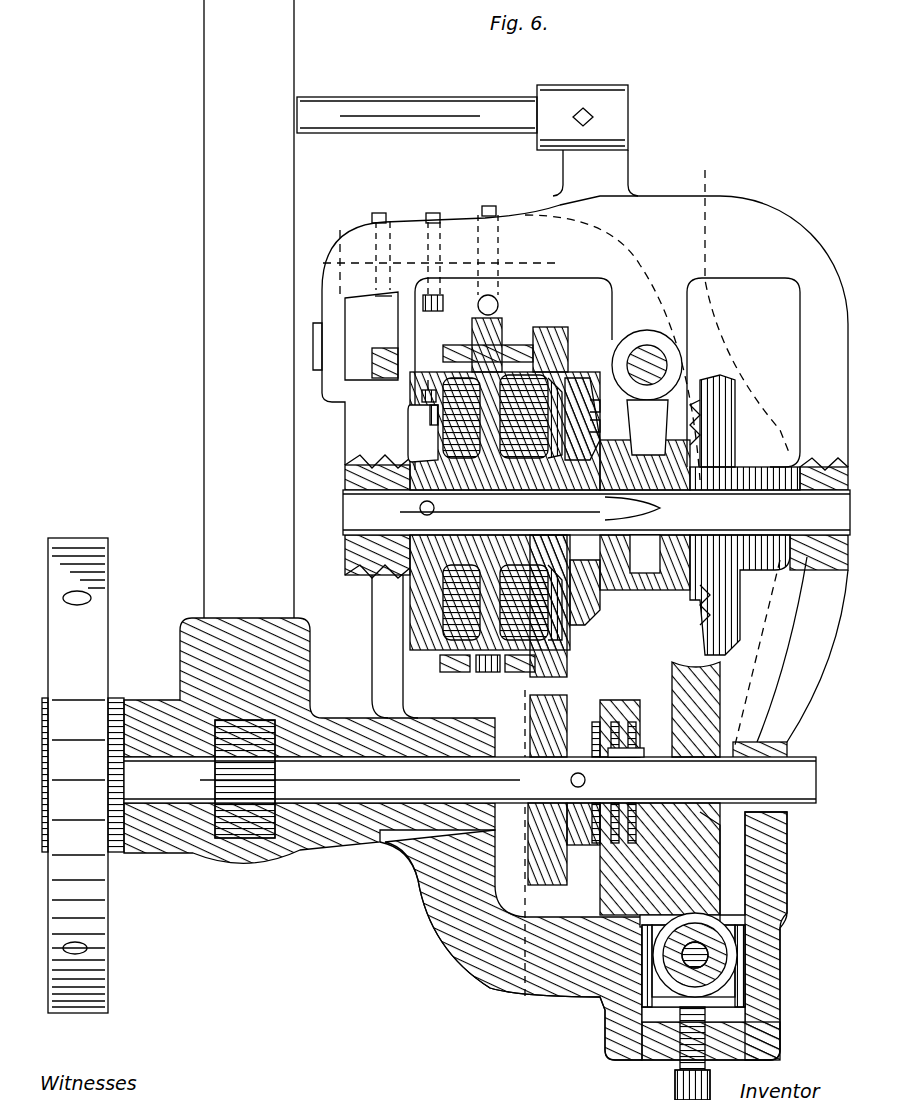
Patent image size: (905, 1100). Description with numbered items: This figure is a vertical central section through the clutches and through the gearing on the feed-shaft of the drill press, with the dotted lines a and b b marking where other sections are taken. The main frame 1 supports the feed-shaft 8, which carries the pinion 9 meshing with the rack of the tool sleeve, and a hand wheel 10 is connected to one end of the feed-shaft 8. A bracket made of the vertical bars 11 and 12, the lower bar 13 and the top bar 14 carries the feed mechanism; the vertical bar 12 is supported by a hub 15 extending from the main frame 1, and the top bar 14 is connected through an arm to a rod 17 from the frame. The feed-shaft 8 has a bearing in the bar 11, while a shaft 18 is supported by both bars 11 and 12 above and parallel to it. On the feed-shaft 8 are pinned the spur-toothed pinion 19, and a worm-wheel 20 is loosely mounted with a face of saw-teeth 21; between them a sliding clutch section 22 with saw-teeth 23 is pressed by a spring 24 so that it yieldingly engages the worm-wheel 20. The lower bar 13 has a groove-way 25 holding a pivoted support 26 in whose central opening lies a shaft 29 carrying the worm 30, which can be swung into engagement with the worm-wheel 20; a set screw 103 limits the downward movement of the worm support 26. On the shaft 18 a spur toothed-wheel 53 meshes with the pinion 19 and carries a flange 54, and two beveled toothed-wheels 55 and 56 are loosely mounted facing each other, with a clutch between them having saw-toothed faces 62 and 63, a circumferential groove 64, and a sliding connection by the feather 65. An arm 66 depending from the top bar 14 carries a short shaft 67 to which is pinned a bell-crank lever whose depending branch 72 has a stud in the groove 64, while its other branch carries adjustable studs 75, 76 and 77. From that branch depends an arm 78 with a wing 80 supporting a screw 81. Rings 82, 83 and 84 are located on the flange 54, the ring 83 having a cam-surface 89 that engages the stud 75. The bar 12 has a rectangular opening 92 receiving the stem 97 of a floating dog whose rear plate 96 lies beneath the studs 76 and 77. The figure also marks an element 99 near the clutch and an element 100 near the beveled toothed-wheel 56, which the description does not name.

The main frame 1 is at (249, 309).
The feed-shaft 8 is at (470, 780).
The pinion 9 is at (275, 776).
The hand wheel 10 is at (118, 583).
The vertical bar 11 is at (795, 652).
The vertical bar 12 is at (309, 687).
The lower bar 13 is at (467, 996).
The top bar 14 is at (585, 457).
The hub 15 is at (435, 815).
The rod 17 is at (467, 140).
The shaft 18 is at (596, 512).
The spur-toothed pinion 19 is at (564, 790).
The worm-wheel 20 is at (660, 709).
The saw-teeth 21 is at (665, 845).
The sliding clutch section 22 is at (632, 722).
The saw-teeth 23 is at (622, 774).
The spring 24 is at (652, 865).
The groove-way 25 is at (648, 1010).
The support 26 is at (745, 978).
The shaft 29 is at (700, 955).
The worm 30 is at (712, 932).
The spur toothed-wheel 53 is at (505, 397).
The flange 54 is at (505, 385).
The beveled toothed-wheel 55 is at (593, 378).
The beveled toothed-wheel 56 is at (745, 417).
The saw-toothed face 62 is at (612, 592).
The saw-toothed face 63 is at (680, 590).
The circumferential groove 64 is at (643, 564).
The feather 65 is at (615, 500).
The arm 66 is at (645, 391).
The short shaft 67 is at (647, 365).
The branch 72 is at (647, 427).
The stud 75 is at (503, 260).
The stud 76 is at (447, 262).
The stud 77 is at (372, 305).
The arm 78 is at (345, 423).
The wing 80 is at (423, 433).
The screw 81 is at (429, 381).
The ring 82 is at (454, 677).
The ring 83 is at (484, 677).
The ring 84 is at (516, 677).
The cam-surface 89 is at (475, 345).
The rectangular opening 92 is at (313, 330).
The rear plate 96 is at (371, 336).
The stem 97 is at (373, 363).
The clutch member 99 is at (593, 601).
The teeth 100 is at (686, 425).
The set screw 103 is at (675, 1053).
The dotted line a is at (729, 400).
The dotted line b b is at (521, 861).